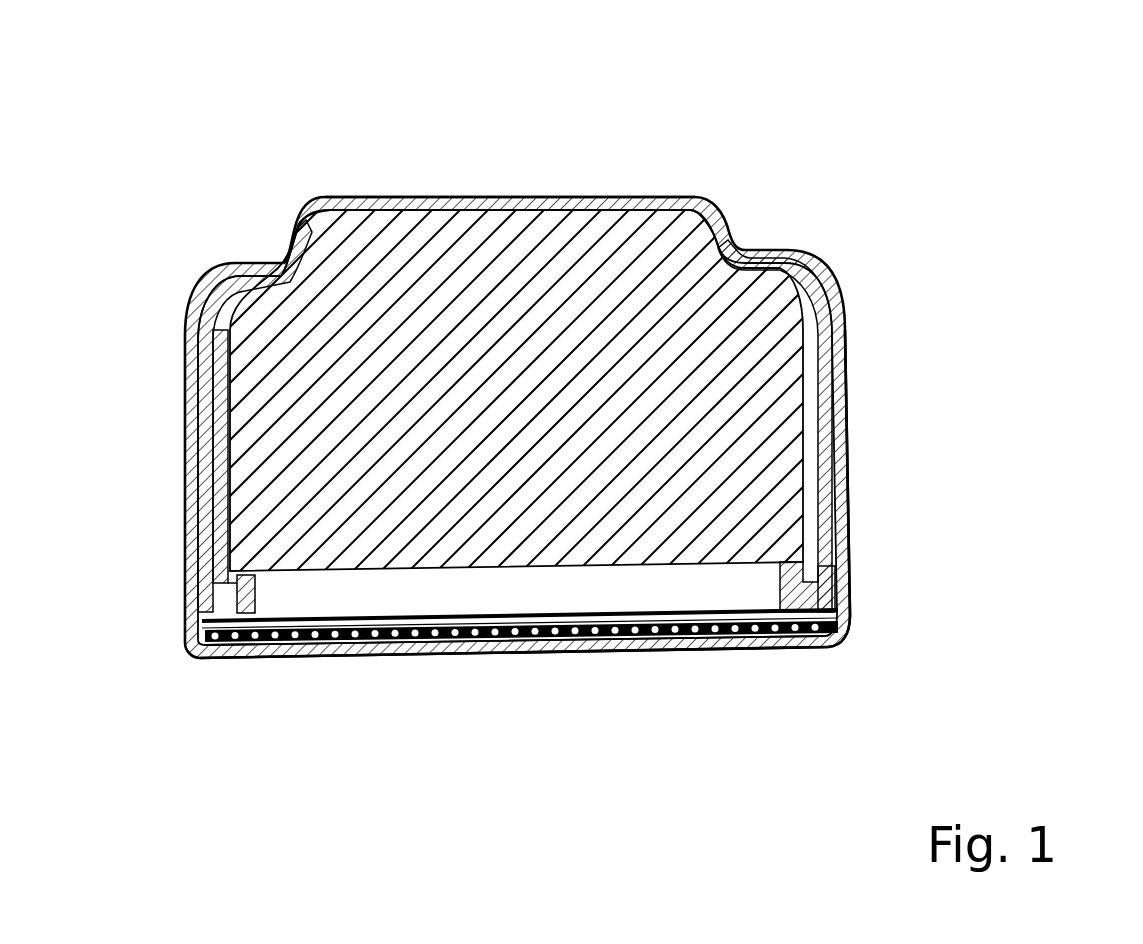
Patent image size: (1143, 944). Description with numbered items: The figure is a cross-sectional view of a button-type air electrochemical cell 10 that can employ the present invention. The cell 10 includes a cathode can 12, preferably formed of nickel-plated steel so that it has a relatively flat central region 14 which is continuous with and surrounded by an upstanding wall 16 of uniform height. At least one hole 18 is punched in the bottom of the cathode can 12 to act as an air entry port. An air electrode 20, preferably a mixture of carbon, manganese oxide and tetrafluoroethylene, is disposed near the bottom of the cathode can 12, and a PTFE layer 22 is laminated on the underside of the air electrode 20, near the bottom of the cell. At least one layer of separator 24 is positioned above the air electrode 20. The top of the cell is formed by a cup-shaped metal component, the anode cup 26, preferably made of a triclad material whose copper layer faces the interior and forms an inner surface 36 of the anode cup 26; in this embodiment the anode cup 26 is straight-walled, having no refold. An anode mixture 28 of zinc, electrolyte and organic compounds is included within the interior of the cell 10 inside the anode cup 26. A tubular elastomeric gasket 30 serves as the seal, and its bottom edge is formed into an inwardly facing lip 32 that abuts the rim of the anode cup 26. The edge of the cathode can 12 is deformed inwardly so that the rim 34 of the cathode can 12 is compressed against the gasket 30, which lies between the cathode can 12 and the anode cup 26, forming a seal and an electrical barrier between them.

The air cell 10 is at (727, 160).
The cathode can 12 is at (845, 325).
The flat central region 14 is at (337, 648).
The upstanding wall 16 is at (848, 440).
The hole 18 is at (530, 645).
The air electrode 20 is at (840, 606).
The PTFE layer 22 is at (838, 645).
The separator 24 is at (832, 607).
The anode cup 26 is at (396, 213).
The anode mixture 28 is at (335, 265).
The gasket 30 is at (205, 440).
The inwardly facing lip 32 is at (243, 588).
The rim 34 is at (776, 254).
The inner surface 36 is at (229, 400).